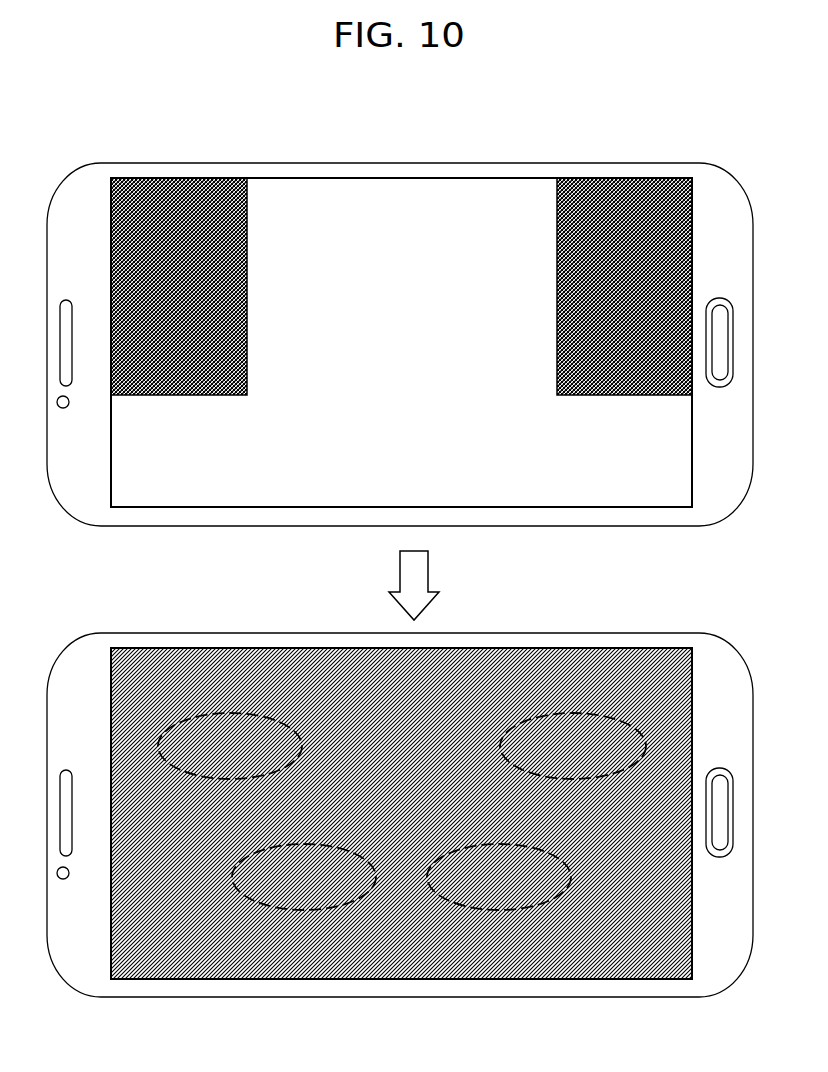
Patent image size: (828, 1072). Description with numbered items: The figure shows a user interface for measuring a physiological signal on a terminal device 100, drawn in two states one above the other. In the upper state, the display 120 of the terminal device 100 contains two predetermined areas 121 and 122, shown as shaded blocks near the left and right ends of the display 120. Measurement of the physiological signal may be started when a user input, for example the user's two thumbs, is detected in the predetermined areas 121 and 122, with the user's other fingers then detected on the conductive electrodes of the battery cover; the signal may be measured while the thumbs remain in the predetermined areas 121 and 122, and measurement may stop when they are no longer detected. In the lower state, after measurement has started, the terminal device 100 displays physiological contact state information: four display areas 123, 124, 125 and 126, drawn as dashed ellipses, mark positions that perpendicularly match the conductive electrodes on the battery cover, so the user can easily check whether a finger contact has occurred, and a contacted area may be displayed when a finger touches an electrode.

The terminal device 100 is at (659, 163).
The display 120 is at (586, 495).
The predetermined area 121 is at (182, 195).
The predetermined area 122 is at (595, 195).
The display area 123 is at (228, 727).
The display area 124 is at (582, 733).
The display area 125 is at (306, 888).
The display area 126 is at (502, 897).